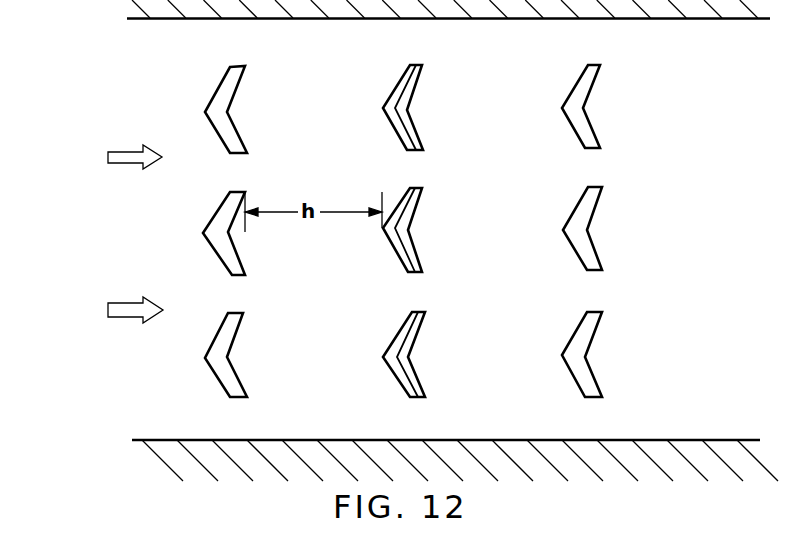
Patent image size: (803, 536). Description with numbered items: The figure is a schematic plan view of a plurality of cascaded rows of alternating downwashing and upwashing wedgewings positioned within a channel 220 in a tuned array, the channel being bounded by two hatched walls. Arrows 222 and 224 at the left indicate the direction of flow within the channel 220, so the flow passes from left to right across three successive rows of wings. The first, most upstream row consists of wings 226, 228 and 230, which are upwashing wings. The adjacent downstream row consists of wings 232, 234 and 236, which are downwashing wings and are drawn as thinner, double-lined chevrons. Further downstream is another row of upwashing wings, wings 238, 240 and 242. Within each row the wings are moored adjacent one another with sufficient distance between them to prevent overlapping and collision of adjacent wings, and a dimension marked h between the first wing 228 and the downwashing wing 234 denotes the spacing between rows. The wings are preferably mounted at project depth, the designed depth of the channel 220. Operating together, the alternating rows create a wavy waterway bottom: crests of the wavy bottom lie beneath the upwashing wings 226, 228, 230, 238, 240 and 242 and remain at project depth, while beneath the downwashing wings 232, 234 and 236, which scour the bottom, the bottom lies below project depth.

The channel 220 is at (624, 415).
The arrow 222 is at (132, 148).
The arrow 224 is at (128, 300).
The upwashing wing 226 is at (215, 97).
The upwashing wing 228 is at (213, 220).
The upwashing wing 230 is at (213, 343).
The downwashing wing 232 is at (392, 93).
The downwashing wing 234 is at (420, 203).
The downwashing wing 236 is at (395, 338).
The upwashing wing 238 is at (572, 95).
The upwashing wing 240 is at (575, 210).
The upwashing wing 242 is at (575, 335).